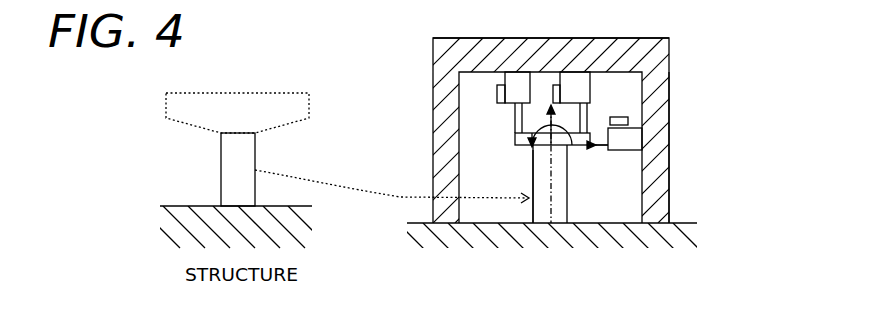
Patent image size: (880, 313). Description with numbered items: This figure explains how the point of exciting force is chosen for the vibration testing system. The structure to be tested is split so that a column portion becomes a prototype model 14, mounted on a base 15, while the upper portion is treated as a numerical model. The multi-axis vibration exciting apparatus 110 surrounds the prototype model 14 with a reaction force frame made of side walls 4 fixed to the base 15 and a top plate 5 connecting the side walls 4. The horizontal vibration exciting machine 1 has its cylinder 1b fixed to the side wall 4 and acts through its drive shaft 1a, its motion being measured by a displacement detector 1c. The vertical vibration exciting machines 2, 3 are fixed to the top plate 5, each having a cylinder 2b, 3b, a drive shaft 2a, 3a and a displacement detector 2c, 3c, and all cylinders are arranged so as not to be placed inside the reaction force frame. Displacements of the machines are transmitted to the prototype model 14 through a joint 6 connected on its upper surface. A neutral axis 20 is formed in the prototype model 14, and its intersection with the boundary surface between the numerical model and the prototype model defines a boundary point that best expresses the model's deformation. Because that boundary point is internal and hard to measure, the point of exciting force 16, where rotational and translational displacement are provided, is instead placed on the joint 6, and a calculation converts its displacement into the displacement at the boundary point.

The horizontal vibration exciting machine 1 is at (644, 140).
The drive shaft 1a is at (600, 148).
The cylinder 1b is at (628, 150).
The displacement detector 1c is at (628, 118).
The vertical vibration exciting machine 2 is at (586, 73).
The drive shaft 2a is at (583, 129).
The cylinder 2b is at (604, 98).
The displacement detector 2c is at (558, 97).
The vertical vibration exciting machine 3 is at (496, 73).
The drive shaft 3a is at (515, 117).
The cylinder 3b is at (508, 78).
The displacement detector 3c is at (497, 97).
The side wall 4 is at (662, 77).
The top plate 5 is at (450, 43).
The joint 6 is at (517, 137).
The prototype model 14 is at (567, 195).
The base 15 is at (682, 240).
The point of exciting force 16 is at (557, 153).
The neutral axis 20 is at (549, 209).
The multi-axis vibration exciting apparatus 110 is at (676, 158).